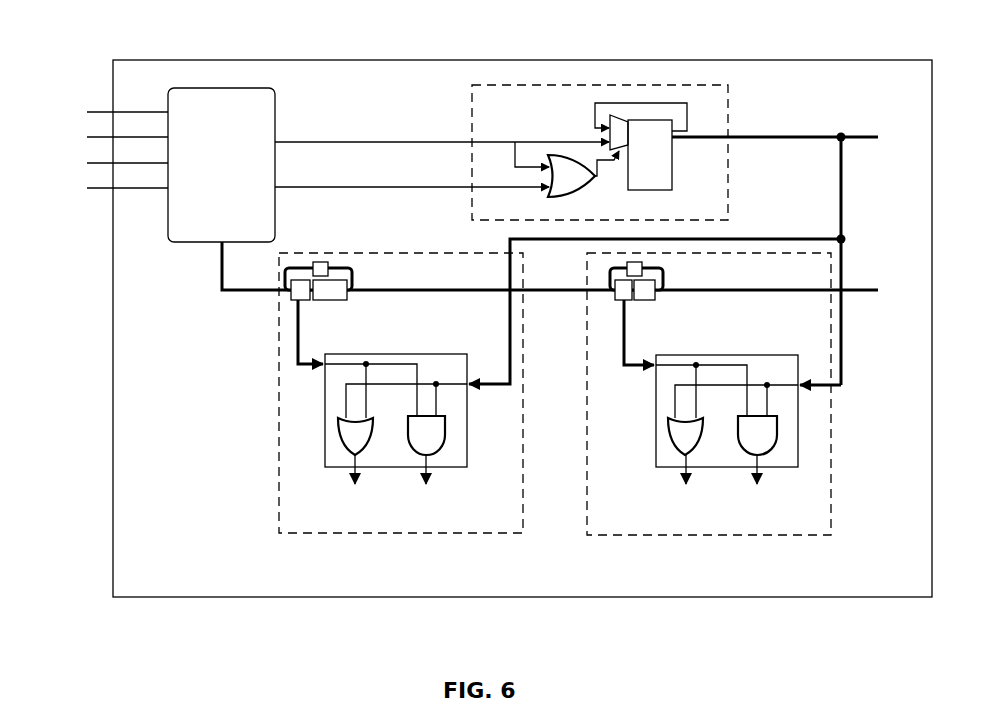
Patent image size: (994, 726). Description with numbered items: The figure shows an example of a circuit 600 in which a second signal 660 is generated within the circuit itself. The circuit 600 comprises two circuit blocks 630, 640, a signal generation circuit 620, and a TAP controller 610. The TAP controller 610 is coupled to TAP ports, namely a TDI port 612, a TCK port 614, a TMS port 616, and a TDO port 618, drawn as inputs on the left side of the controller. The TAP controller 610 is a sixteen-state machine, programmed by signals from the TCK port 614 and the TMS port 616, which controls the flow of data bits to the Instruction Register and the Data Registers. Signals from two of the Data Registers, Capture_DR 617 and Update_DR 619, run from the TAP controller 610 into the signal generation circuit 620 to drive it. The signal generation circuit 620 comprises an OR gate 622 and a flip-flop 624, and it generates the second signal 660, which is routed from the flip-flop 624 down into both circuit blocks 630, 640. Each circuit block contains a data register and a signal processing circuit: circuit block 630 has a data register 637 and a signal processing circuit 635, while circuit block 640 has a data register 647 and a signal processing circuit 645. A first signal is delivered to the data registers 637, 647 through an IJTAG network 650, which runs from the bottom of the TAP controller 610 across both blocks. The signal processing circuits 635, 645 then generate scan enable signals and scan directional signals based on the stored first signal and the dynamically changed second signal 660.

The circuit 600 is at (522, 328).
The TAP controller 610 is at (221, 165).
The TDI port 612 is at (94, 112).
The TCK port 614 is at (93, 137).
The TMS port 616 is at (92, 163).
The TDO port 618 is at (93, 188).
The Capture_DR signal 617 is at (442, 142).
The Update_DR signal 619 is at (412, 175).
The signal generation circuit 620 is at (600, 152).
The OR gate 622 is at (571, 176).
The flip-flop 624 is at (650, 155).
The second signal 660 is at (757, 122).
The IJTAG network 650 is at (206, 293).
The circuit block 630 is at (401, 393).
The data register 637 is at (354, 302).
The signal processing circuit 635 is at (396, 419).
The circuit block 640 is at (709, 394).
The data register 647 is at (652, 308).
The signal processing circuit 645 is at (727, 419).